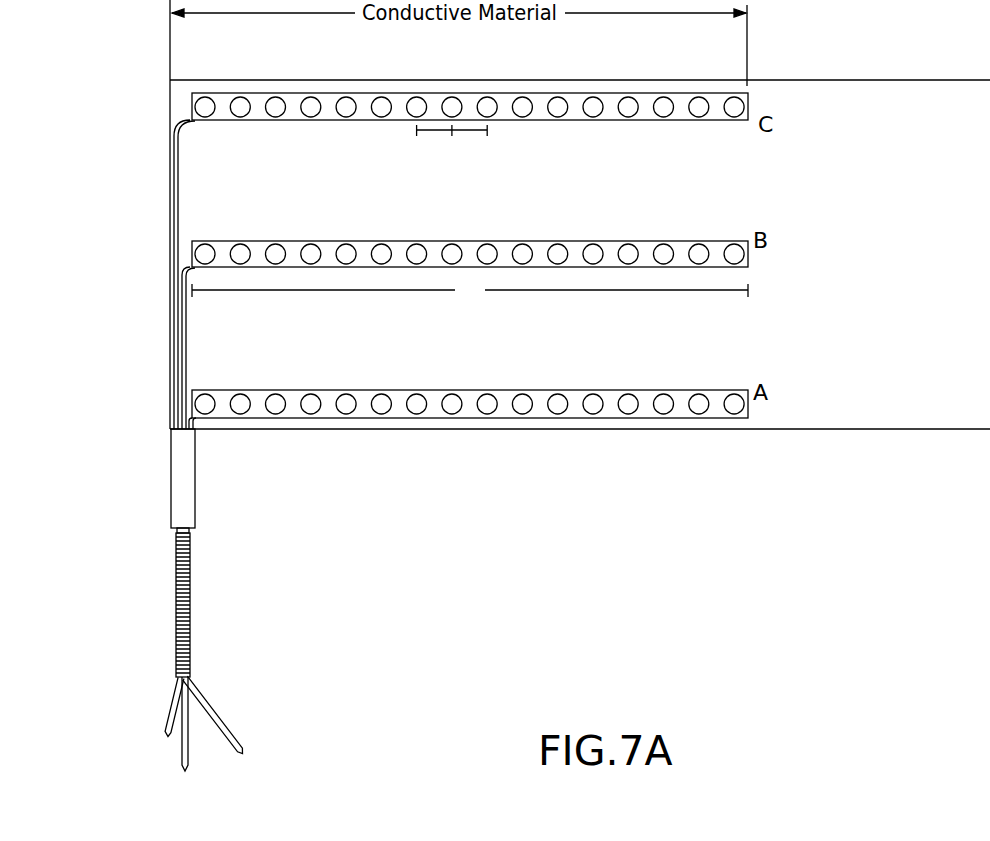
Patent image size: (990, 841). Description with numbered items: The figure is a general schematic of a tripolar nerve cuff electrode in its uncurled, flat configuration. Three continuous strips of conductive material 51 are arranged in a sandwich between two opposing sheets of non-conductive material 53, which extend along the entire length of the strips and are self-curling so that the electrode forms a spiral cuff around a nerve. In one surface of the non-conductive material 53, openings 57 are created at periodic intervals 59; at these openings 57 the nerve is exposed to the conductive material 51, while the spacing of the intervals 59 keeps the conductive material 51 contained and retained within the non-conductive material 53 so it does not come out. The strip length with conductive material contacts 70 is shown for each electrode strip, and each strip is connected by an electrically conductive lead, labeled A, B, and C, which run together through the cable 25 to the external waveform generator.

The cable 25 is at (190, 644).
The conductive material 51 is at (205, 105).
The non-conductive material 53 is at (717, 106).
The openings 57 is at (523, 105).
The periodic intervals 59 is at (452, 144).
The strip length with conductive material contacts 70 is at (470, 290).